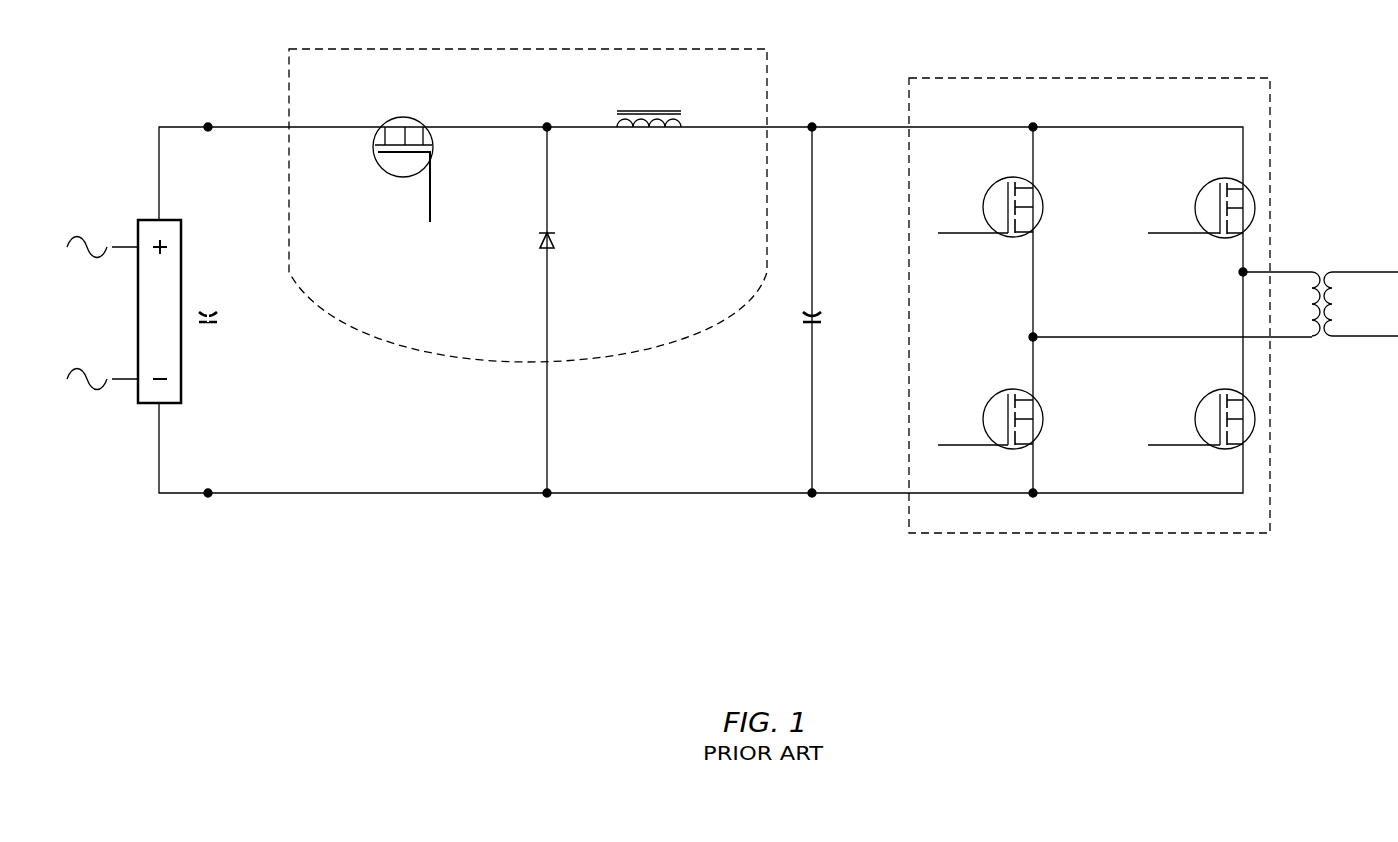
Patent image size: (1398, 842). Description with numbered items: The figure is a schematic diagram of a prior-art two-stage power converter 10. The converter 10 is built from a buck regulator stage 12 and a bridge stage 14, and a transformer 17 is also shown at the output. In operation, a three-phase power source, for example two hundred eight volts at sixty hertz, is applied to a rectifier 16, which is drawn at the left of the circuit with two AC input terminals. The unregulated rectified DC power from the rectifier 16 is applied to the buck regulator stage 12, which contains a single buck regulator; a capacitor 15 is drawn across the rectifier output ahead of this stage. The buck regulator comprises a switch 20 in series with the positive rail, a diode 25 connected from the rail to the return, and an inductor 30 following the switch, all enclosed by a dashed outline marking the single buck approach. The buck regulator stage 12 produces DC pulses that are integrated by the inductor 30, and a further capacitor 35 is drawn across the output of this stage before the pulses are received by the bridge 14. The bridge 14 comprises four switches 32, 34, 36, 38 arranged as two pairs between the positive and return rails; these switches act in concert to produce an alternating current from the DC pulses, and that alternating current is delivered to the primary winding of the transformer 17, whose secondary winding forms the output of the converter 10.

The converter 10 is at (624, 606).
The buck regulator stage 12 is at (289, 72).
The bridge stage 14 is at (909, 90).
The input capacitor 15 is at (218, 320).
The rectifier 16 is at (138, 312).
The transformer 17 is at (1327, 257).
The switch 20 is at (403, 177).
The diode 25 is at (540, 240).
The inductor 30 is at (648, 132).
The switch 32 is at (1043, 207).
The switch 34 is at (1043, 419).
The output capacitor 35 is at (822, 320).
The switch 36 is at (1195, 423).
The switch 38 is at (1195, 210).